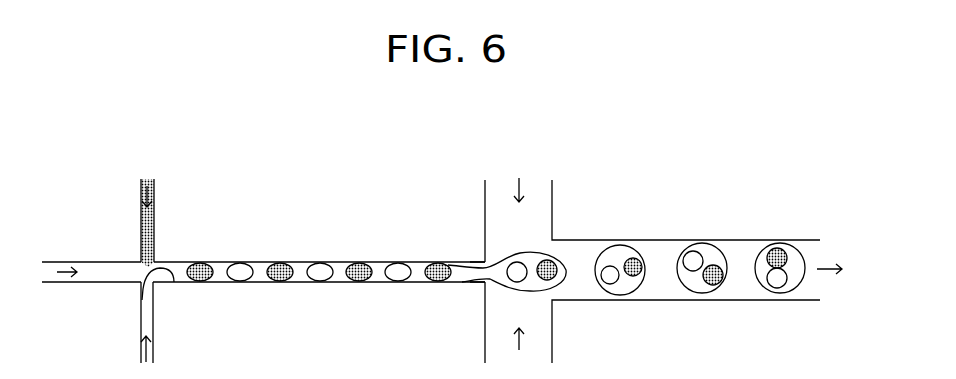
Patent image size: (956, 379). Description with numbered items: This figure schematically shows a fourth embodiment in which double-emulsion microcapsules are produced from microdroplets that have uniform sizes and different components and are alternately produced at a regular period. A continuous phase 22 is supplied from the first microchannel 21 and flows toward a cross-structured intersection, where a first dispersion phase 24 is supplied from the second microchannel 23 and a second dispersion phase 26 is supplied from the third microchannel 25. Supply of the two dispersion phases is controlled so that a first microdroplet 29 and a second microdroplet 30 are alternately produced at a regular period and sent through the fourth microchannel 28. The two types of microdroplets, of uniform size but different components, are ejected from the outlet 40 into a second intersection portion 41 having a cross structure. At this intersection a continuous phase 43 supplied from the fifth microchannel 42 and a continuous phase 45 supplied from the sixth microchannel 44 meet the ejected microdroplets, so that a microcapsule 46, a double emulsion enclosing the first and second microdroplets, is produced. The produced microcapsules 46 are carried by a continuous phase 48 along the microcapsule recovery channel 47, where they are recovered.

The first microchannel 21 is at (91, 262).
The continuous phase 22 is at (60, 271).
The second microchannel 23 is at (154, 322).
The first dispersion phase 24 is at (148, 343).
The third microchannel 25 is at (155, 216).
The second dispersion phase 26 is at (155, 193).
The fourth microchannel 28 is at (343, 261).
The first microdroplet 29 is at (243, 262).
The second microdroplet 30 is at (280, 262).
The outlet 40 is at (473, 260).
The intersection portion 41 is at (515, 289).
The fifth microchannel 42 is at (552, 357).
The continuous phase 43 is at (520, 342).
The sixth microchannel 44 is at (552, 219).
The continuous phase 45 is at (521, 188).
The microcapsule 46 is at (627, 248).
The microcapsule recovery channel 47 is at (749, 240).
The continuous phase 48 is at (822, 269).